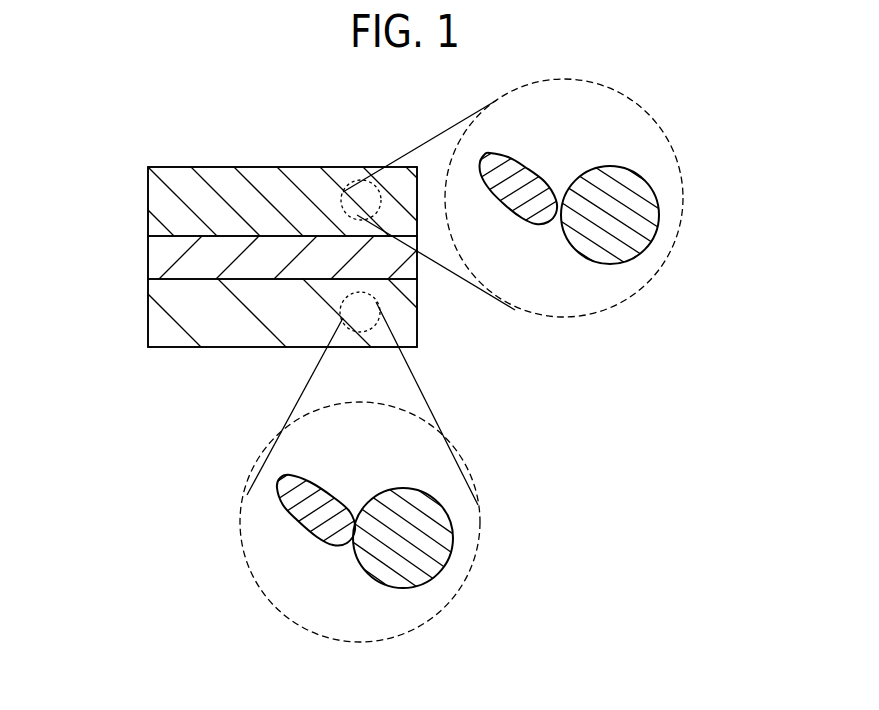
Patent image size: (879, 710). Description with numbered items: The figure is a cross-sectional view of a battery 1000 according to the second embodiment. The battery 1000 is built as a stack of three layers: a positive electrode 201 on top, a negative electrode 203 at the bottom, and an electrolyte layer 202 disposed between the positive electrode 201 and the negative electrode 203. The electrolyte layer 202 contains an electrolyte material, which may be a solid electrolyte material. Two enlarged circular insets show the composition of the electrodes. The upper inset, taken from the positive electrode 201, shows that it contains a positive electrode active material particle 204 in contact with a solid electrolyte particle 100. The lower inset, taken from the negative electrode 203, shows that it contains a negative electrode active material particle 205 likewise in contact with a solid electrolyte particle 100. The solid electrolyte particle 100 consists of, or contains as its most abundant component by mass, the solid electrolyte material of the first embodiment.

The battery 1000 is at (304, 118).
The positive electrode 201 is at (168, 193).
The electrolyte layer 202 is at (168, 253).
The negative electrode 203 is at (168, 310).
The solid electrolyte particle 100 is at (533, 215).
The positive electrode active material particle 204 is at (632, 212).
The negative electrode active material particle 205 is at (427, 523).